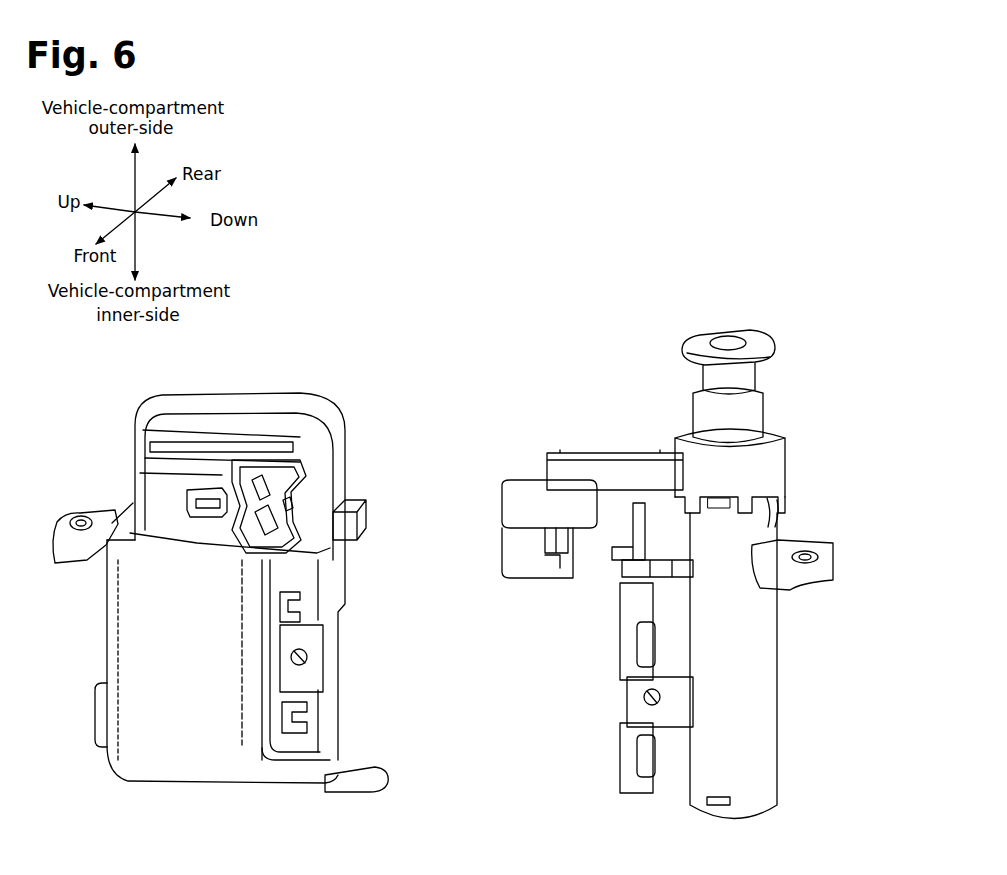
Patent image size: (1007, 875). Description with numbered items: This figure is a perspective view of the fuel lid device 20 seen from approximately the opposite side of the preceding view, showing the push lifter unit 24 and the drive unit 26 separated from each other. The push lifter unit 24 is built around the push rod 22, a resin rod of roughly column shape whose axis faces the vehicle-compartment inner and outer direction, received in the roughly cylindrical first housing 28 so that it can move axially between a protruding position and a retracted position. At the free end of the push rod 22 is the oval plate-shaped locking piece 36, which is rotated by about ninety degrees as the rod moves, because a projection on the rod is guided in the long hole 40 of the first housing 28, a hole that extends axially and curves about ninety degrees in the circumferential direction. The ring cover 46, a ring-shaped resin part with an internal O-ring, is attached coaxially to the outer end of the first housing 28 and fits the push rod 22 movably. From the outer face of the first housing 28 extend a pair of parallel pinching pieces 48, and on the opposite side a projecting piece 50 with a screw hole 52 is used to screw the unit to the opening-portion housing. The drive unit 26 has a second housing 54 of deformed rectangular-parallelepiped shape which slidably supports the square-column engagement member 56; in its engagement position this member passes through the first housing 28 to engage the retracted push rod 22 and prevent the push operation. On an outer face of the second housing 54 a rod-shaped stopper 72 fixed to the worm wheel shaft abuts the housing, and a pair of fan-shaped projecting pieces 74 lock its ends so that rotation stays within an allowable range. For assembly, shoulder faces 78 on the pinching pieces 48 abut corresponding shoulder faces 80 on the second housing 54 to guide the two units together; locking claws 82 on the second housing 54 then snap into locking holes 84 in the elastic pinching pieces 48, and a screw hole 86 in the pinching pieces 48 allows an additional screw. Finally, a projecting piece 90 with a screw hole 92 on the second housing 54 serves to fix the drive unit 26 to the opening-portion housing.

The fuel lid device 20 is at (420, 240).
The push lifter unit 24 is at (528, 323).
The drive unit 26 is at (368, 309).
The push rod 22 is at (742, 378).
The first housing 28 is at (760, 702).
The locking piece 36 is at (752, 346).
The long hole 40 is at (778, 512).
The ring cover 46 is at (776, 452).
The pinching pieces 48 is at (540, 530).
The projecting piece 50 is at (808, 586).
The screw hole 52 is at (812, 553).
The second housing 54 is at (176, 782).
The engagement member 56 is at (364, 522).
The stopper 72 is at (300, 482).
The projecting pieces 74 is at (232, 545).
The shoulder faces 78 is at (587, 585).
The corresponding shoulder faces 80 is at (170, 548).
The locking claws 82 is at (188, 496).
The locking holes 84 is at (540, 560).
The screw hole 86 is at (660, 702).
The projecting piece 90 is at (64, 546).
The screw hole 92 is at (80, 516).